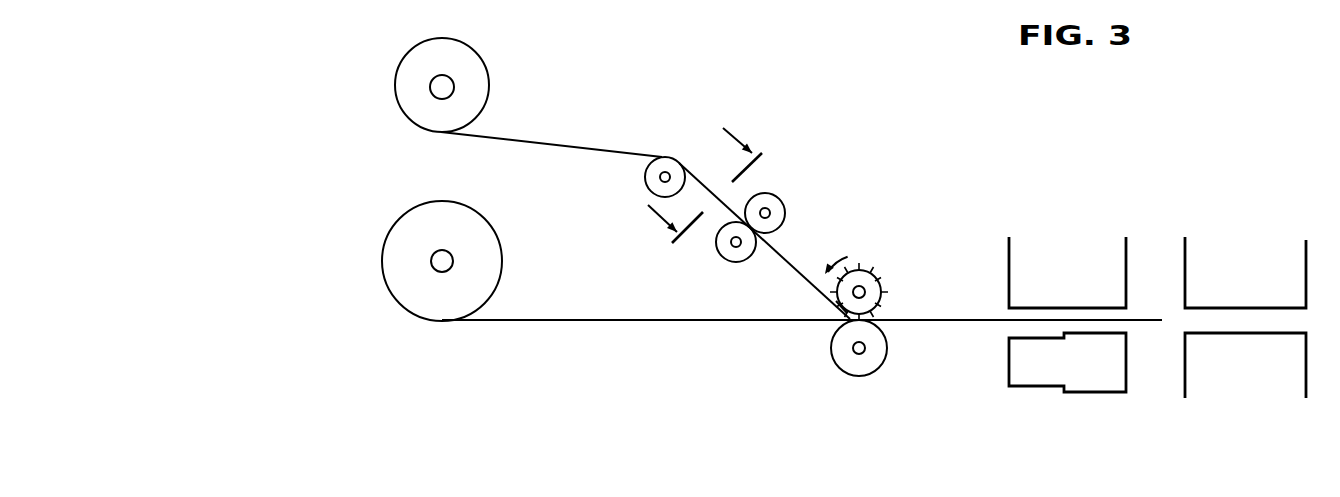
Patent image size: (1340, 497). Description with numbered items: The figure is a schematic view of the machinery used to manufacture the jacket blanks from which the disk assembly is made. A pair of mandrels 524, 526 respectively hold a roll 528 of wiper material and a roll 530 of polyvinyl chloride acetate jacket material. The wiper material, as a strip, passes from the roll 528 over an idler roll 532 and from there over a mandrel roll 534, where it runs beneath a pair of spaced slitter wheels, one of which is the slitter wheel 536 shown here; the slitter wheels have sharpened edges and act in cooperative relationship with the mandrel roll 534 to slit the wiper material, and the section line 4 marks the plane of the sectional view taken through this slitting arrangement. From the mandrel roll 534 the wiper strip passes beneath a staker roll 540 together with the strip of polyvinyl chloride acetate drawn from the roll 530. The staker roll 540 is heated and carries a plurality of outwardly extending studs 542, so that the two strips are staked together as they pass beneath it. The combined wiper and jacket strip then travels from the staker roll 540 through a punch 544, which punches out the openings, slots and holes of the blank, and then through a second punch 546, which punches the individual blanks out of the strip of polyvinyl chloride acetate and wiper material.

The section line 4- 4 is at (715, 198).
The mandrel 524 is at (479, 58).
The mandrel 526 is at (481, 225).
The roll of wiper material 528 is at (423, 75).
The roll of polyvinyl chloride acetate jacket material 530 is at (429, 249).
The idler roll 532 is at (631, 183).
The mandrel roll 534 is at (750, 265).
The slitter wheel 536 is at (794, 203).
The staker roll 540 is at (877, 263).
The studs 542 is at (888, 283).
The punch 544 is at (1090, 275).
The punch 546 is at (1266, 275).